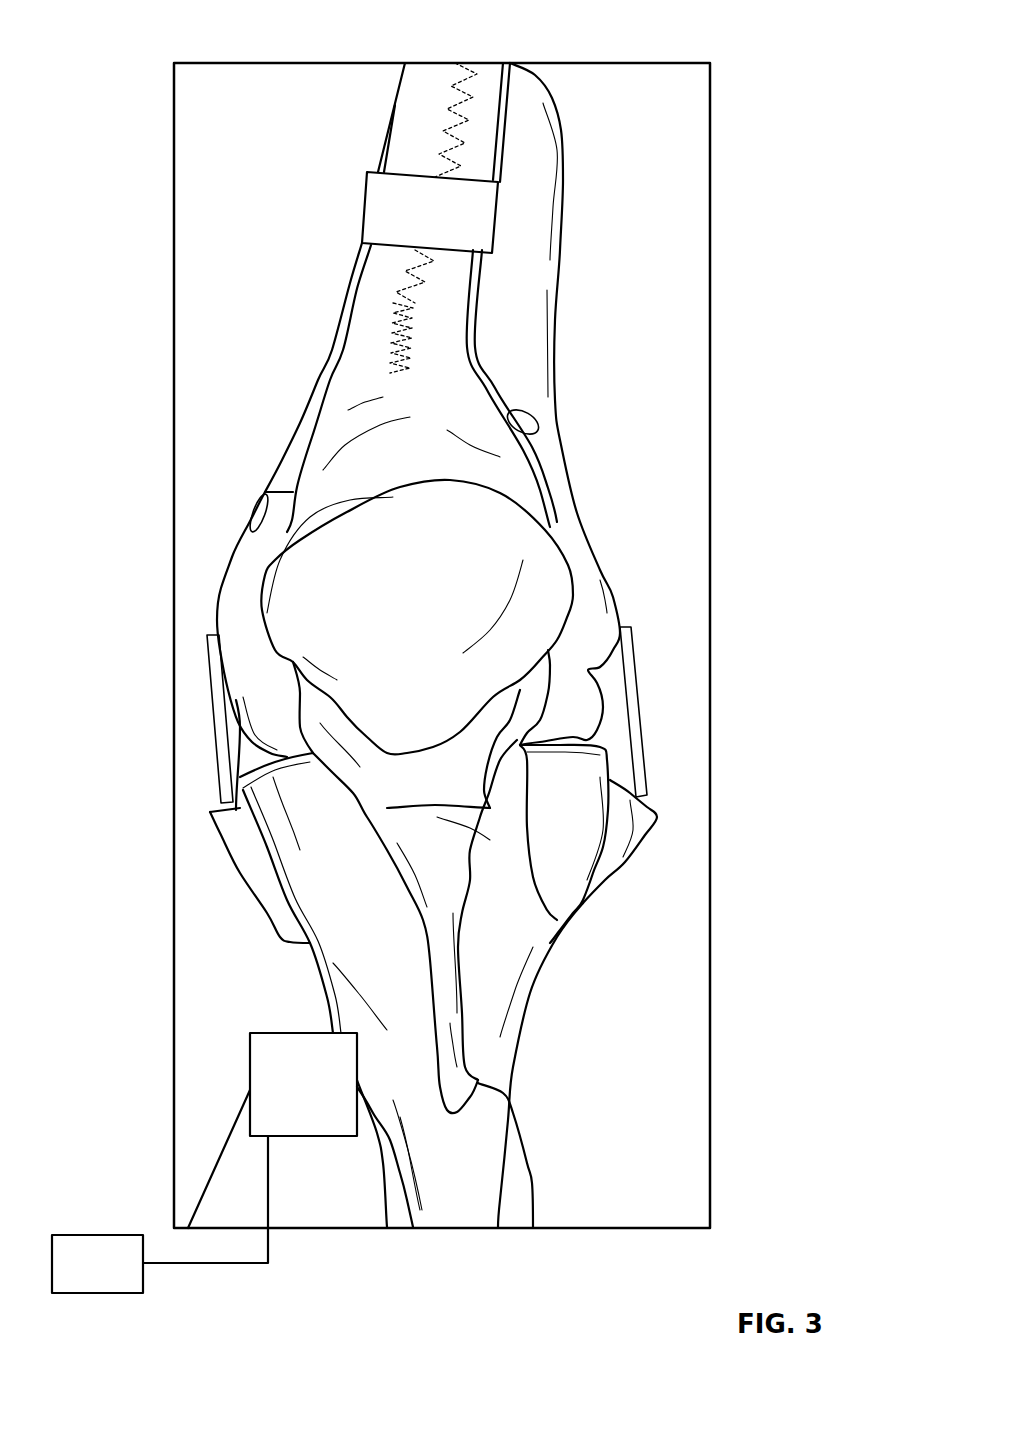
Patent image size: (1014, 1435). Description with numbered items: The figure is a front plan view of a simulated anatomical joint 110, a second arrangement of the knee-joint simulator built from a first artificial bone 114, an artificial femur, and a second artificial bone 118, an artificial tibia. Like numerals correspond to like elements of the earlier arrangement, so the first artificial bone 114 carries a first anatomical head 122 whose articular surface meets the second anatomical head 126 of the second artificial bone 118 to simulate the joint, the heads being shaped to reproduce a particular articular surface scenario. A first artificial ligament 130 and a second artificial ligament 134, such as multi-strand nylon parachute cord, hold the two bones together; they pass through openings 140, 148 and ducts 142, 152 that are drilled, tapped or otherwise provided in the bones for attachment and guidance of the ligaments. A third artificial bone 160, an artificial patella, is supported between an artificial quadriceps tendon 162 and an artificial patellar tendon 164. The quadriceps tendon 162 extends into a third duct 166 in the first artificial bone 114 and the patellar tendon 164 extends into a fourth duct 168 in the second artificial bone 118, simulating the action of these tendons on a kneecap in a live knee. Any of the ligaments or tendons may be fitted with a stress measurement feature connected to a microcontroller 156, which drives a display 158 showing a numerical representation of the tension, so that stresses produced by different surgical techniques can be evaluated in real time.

The simulated anatomical joint 110 is at (130, 40).
The first artificial bone 114 is at (348, 282).
The third opening or duct 166 is at (497, 215).
The artificial quadriceps tendon 162 is at (293, 492).
The first anatomical head 122 is at (557, 497).
The third artificial bone 160 is at (270, 593).
The opening 140 is at (597, 573).
The opening 148 is at (207, 646).
The first artificial ligament 130 is at (657, 702).
The second artificial ligament 134 is at (207, 750).
The duct 142 is at (657, 817).
The second anatomical head 126 is at (560, 930).
The duct 152 is at (263, 902).
The artificial patellar tendon 164 is at (447, 940).
The second artificial bone 118 is at (513, 1067).
The microcontroller 156 is at (248, 1078).
The display 158 is at (160, 1191).
The fourth opening or duct 168 is at (534, 1228).